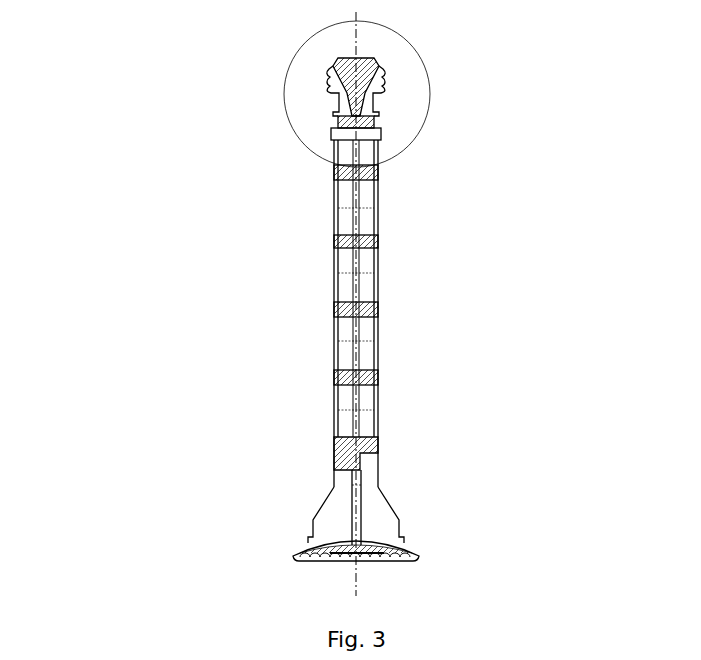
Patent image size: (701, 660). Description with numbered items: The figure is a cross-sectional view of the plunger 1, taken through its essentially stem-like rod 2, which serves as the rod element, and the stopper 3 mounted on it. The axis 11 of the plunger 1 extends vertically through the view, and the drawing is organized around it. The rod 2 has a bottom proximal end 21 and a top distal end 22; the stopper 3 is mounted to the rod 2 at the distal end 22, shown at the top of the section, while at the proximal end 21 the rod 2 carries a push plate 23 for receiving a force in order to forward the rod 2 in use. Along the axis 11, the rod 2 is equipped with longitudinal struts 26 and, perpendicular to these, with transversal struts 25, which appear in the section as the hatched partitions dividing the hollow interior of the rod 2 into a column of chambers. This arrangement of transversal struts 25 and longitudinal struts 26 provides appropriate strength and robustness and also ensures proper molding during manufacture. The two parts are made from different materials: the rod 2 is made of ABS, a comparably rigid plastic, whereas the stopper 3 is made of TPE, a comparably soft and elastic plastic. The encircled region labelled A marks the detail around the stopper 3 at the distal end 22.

The plunger 1 is at (296, 245).
The rod 2 is at (318, 378).
The stopper 3 is at (371, 57).
The axis 11 is at (360, 564).
The proximal end 21 is at (316, 561).
The distal end 22 is at (330, 70).
The push plate 23 is at (418, 556).
The transversal struts 25 is at (372, 308).
The longitudinal struts 26 is at (360, 422).
The detail region A is at (433, 92).